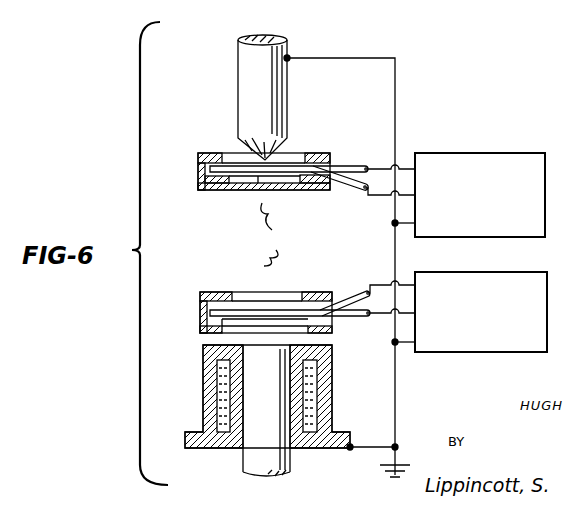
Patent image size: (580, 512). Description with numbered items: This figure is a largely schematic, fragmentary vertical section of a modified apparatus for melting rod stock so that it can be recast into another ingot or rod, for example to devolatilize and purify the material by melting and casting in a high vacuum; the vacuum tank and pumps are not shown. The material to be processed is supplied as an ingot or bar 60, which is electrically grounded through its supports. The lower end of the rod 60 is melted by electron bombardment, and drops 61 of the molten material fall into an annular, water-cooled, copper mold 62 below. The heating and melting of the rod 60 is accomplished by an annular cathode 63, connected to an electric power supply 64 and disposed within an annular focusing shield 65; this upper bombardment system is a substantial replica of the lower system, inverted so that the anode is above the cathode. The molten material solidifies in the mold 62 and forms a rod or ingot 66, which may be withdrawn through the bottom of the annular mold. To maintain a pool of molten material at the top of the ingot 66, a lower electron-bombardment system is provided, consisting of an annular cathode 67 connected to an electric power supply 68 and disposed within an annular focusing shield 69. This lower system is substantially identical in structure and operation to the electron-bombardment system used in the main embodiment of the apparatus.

The ingot or bar 60 is at (240, 68).
The drops 61 is at (275, 234).
The annular, water-cooled, copper mold 62 is at (327, 394).
The annular cathode 63 is at (244, 172).
The electric power supply 64 is at (487, 152).
The annular focusing shield 65 is at (198, 173).
The rod or ingot 66 is at (244, 468).
The annular cathode 67 is at (240, 313).
The electric power supply 68 is at (545, 272).
The annular focusing shield 69 is at (200, 312).